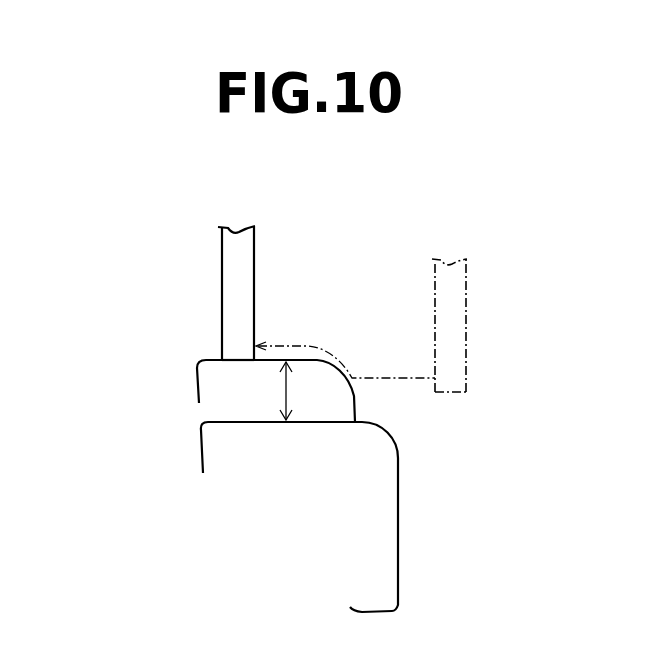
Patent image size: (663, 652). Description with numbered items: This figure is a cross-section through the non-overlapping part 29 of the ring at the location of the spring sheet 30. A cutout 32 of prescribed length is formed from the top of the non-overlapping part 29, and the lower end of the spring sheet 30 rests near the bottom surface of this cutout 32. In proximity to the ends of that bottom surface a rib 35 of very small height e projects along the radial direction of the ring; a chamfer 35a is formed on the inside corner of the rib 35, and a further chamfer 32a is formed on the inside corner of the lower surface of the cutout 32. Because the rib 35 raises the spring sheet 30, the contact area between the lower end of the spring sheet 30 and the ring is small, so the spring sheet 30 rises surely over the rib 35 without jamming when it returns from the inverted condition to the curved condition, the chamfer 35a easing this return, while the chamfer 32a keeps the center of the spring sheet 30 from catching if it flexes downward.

The spring sheet 30 is at (236, 237).
The rib 35 is at (208, 358).
The chamfer 35a is at (352, 382).
The cutout 32 is at (228, 421).
The chamfer 32a is at (387, 431).
The non-overlapping part 29 is at (378, 524).